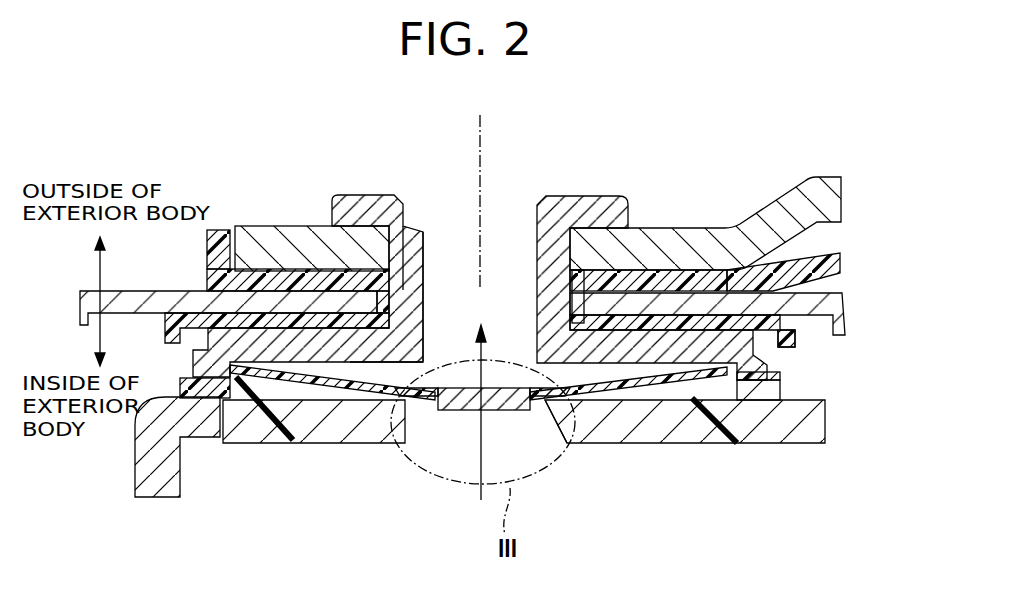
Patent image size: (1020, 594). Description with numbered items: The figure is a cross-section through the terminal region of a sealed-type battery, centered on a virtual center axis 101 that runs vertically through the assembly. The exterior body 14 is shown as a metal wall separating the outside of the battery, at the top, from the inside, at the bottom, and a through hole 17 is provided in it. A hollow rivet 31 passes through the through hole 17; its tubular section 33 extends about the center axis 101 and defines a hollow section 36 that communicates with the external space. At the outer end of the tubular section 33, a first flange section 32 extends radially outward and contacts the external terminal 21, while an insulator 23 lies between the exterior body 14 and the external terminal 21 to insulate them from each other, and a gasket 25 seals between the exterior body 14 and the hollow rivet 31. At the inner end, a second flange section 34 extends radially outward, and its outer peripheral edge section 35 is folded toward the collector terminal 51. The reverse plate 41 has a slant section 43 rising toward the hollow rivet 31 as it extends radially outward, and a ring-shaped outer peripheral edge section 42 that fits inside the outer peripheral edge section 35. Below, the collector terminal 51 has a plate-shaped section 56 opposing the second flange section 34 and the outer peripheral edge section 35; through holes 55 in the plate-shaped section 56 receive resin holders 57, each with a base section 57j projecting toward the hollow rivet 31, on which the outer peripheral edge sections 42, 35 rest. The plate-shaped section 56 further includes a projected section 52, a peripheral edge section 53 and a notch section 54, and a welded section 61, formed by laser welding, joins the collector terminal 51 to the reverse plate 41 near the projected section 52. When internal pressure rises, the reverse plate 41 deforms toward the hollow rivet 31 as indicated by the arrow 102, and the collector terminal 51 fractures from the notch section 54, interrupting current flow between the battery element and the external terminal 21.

The virtual center axis 101 is at (482, 185).
The arrow 102 is at (501, 391).
The exterior body 14 is at (150, 300).
The through hole 17 is at (583, 270).
The external terminal 21 is at (275, 243).
The insulator 23 is at (843, 265).
The gasket 25 is at (797, 338).
The hollow rivet 31 is at (352, 193).
The first flange section 32 is at (612, 205).
The tubular section 33 is at (423, 285).
The second flange section 34 is at (625, 395).
The outer peripheral edge section 35 is at (770, 365).
The hollow section 36 is at (452, 255).
The reverse plate 41 is at (360, 392).
The outer peripheral edge section 42 is at (245, 390).
The slant section 43 is at (585, 430).
The collector terminal 51 is at (805, 444).
The projected section 52 is at (460, 398).
The peripheral edge section 53 is at (430, 388).
The notch section 54 is at (543, 380).
The through holes 55 is at (215, 420).
The plate-shaped section 56 is at (800, 408).
The resin holder 57 is at (268, 430).
The base section 57j is at (180, 385).
The welded section 61 is at (433, 360).